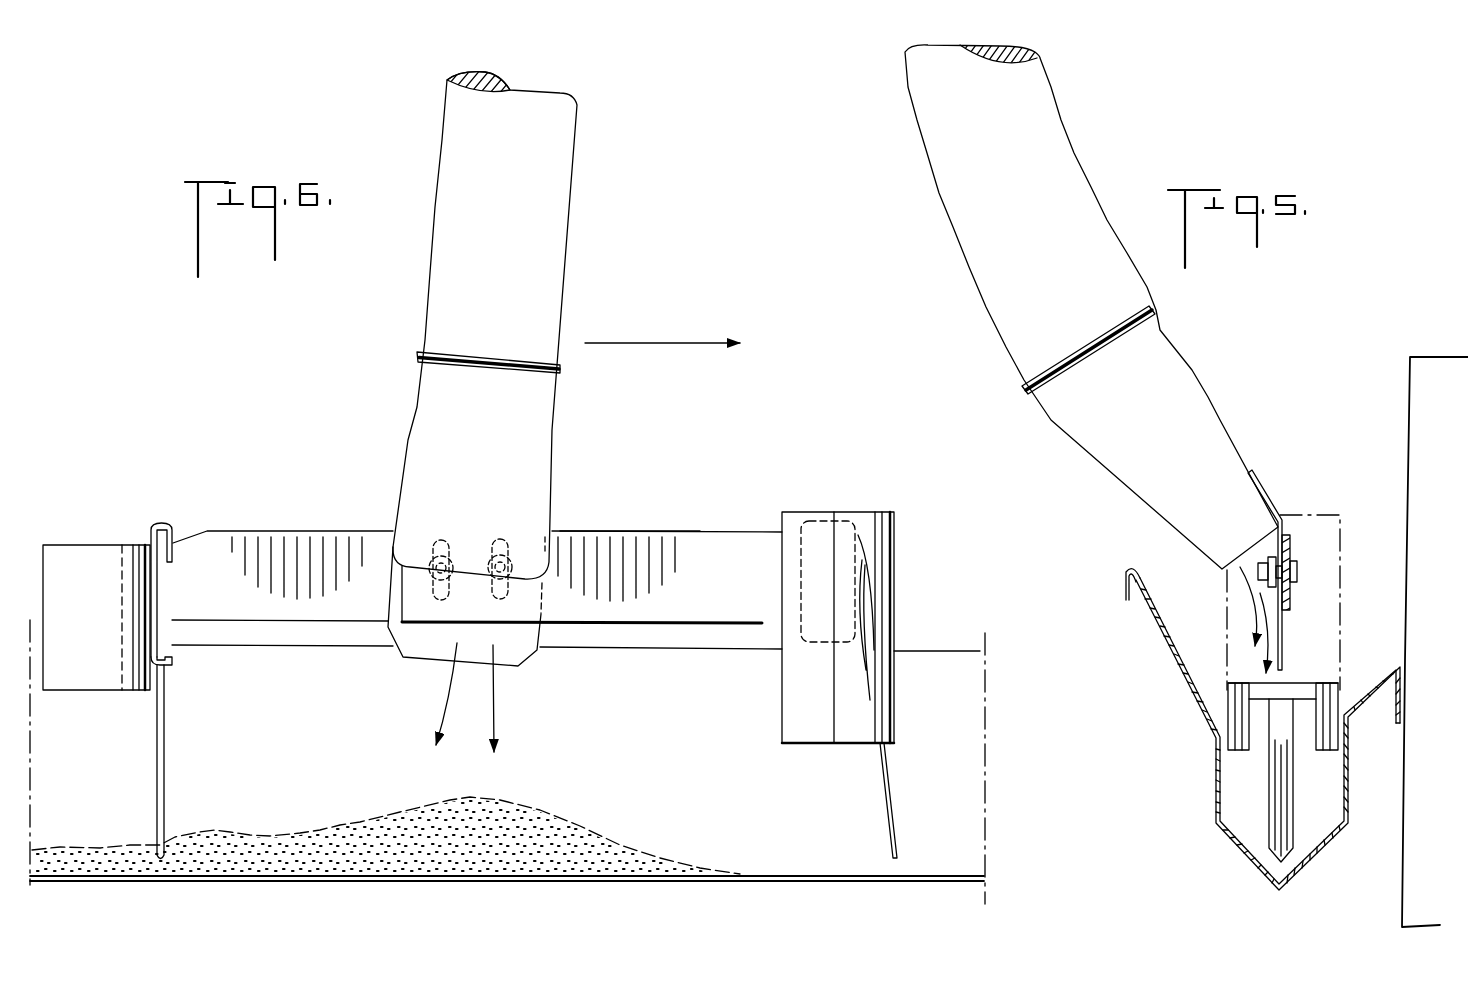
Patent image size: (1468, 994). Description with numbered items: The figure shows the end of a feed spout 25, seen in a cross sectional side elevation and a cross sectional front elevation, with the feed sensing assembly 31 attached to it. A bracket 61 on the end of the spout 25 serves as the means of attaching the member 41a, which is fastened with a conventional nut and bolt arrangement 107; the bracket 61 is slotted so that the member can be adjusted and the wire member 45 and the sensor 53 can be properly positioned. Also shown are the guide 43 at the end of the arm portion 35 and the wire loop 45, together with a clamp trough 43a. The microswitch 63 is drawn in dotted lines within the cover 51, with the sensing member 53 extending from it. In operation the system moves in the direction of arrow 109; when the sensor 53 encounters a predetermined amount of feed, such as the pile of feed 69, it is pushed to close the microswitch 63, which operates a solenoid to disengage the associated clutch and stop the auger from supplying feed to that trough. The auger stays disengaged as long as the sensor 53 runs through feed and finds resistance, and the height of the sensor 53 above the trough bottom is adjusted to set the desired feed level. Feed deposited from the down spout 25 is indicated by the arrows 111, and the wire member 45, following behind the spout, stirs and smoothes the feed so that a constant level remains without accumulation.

In FIG. 6, the feed spout 25 is at (553, 243).
In FIG. 5, the feed spout 25 is at (1048, 152).
In FIG. 6, the feed sensing assembly 31 is at (612, 498).
In FIG. 6, the arm portion 35 is at (275, 530).
In FIG. 6, the member 41a is at (703, 518).
In FIG. 5, the member 41a is at (1290, 548).
In FIG. 6, the guide 43 is at (123, 553).
In FIG. 6, the clamp trough 43a is at (852, 745).
In FIG. 5, the clamp trough 43a is at (1226, 722).
In FIG. 6, the wire loop 45 is at (166, 747).
In FIG. 6, the cover 51 is at (891, 533).
In FIG. 6, the sensing member 53 is at (889, 777).
In FIG. 5, the sensing member 53 is at (1272, 798).
In FIG. 6, the bracket 61 is at (528, 661).
In FIG. 5, the bracket 61 is at (1267, 493).
In FIG. 6, the microswitch 63 is at (822, 518).
In FIG. 6, the pile of feed 69 is at (386, 826).
In FIG. 5, the nut and bolt arrangement 107 is at (1297, 568).
In FIG. 6, the arrow 109 is at (648, 343).
In FIG. 6, the arrows 111 is at (498, 718).